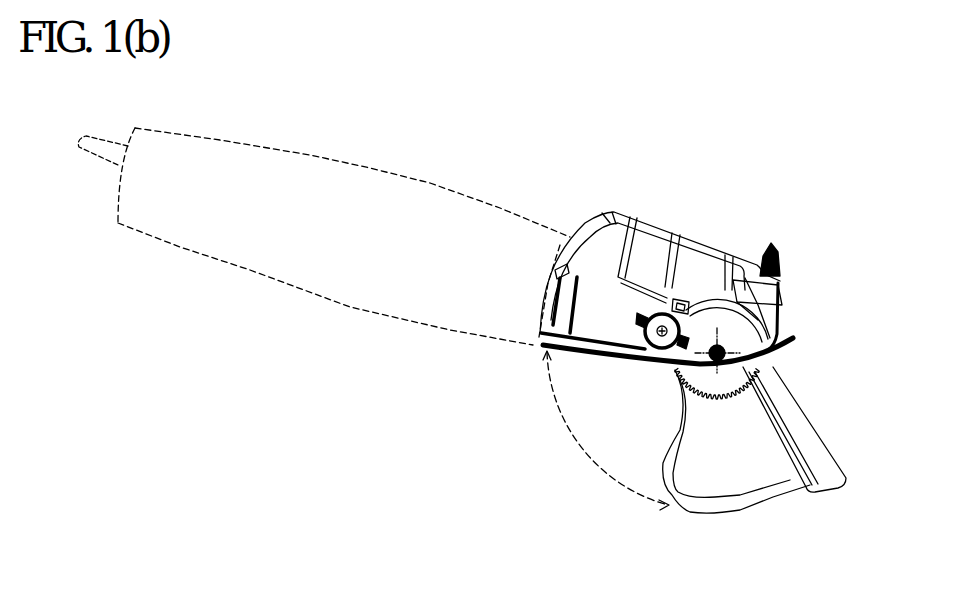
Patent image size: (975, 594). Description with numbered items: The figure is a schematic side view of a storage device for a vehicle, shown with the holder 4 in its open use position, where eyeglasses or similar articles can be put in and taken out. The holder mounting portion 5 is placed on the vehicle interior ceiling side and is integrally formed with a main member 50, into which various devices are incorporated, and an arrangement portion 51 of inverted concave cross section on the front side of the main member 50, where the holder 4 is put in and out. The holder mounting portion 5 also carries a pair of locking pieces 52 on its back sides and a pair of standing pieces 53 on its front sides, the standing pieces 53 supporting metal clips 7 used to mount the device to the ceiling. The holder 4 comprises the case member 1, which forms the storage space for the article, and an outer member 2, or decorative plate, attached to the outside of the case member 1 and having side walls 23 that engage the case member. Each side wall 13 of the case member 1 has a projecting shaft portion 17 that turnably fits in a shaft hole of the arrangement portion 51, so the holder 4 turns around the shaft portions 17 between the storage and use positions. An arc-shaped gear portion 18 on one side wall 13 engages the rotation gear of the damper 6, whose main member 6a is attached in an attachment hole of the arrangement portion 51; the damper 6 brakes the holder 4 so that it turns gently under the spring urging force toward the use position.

The case member 1 is at (706, 441).
The side wall 13 is at (760, 482).
The outer member 2 is at (836, 429).
The side wall 23 is at (807, 433).
The holder 4 is at (749, 521).
The holder mounting portion 5 is at (344, 222).
The main member 50 is at (313, 157).
The locking piece 52 is at (94, 135).
The arrangement portion 51 is at (666, 222).
The standing piece 53 is at (779, 268).
The clip 7 is at (774, 254).
The damper 6 is at (584, 365).
The main member 6a is at (645, 335).
The shaft portion 17 is at (730, 348).
The gear portion 18 is at (692, 387).